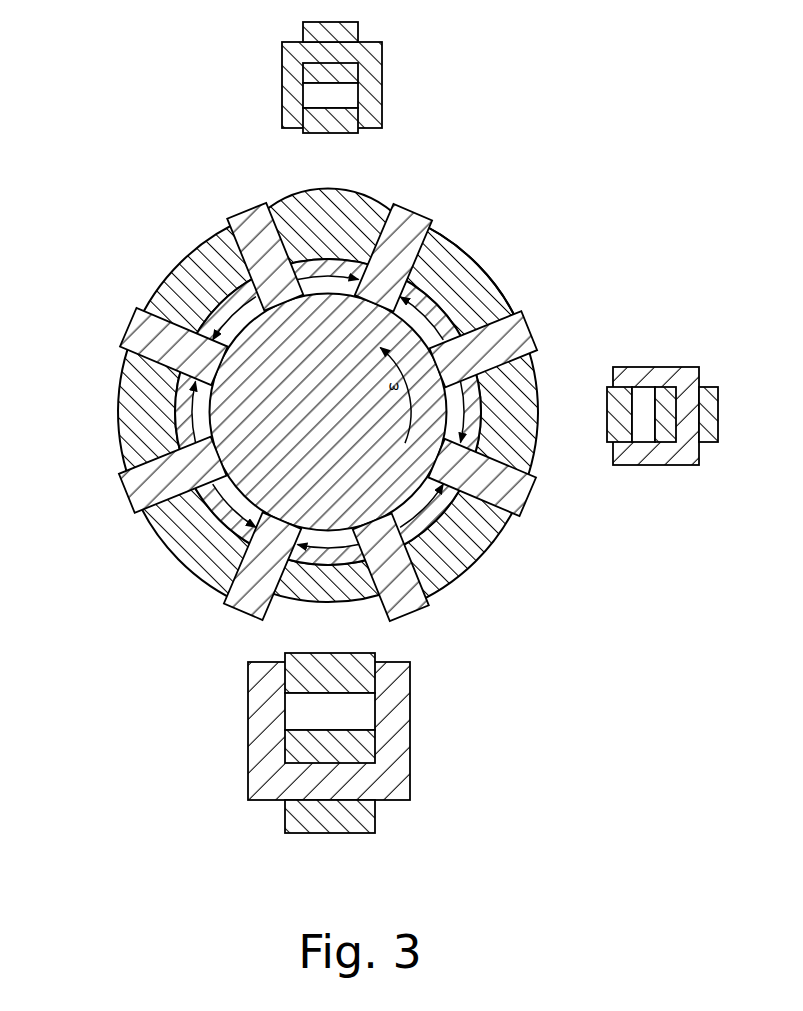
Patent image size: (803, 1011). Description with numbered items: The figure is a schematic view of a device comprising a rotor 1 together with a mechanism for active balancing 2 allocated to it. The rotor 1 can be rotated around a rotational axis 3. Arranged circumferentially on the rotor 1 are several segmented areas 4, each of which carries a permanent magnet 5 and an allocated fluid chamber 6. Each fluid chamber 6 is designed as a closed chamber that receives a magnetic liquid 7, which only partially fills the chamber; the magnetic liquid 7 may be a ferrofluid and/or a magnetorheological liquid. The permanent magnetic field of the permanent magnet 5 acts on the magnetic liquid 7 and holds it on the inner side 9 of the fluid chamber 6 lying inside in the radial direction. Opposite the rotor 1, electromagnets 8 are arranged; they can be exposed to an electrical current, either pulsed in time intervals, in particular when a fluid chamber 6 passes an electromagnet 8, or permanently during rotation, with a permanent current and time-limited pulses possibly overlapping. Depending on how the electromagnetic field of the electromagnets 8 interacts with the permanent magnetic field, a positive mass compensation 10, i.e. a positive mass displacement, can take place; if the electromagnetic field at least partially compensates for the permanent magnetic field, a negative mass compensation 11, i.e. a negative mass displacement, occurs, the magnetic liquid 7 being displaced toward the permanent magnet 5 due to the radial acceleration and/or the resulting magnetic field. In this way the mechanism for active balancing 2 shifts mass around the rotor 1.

The rotor 1 is at (223, 443).
The mechanism for balancing 2 is at (410, 643).
The rotational axis 3 is at (327, 413).
The segmented area 4 is at (142, 369).
The permanent magnet 5 is at (190, 271).
The fluid chamber 6 is at (507, 303).
The magnetic liquid 7 is at (440, 272).
The electromagnet 8 is at (328, 818).
The inner side 9 is at (227, 535).
The positive mass compensation 10 is at (350, 185).
The negative mass compensation 11 is at (318, 603).